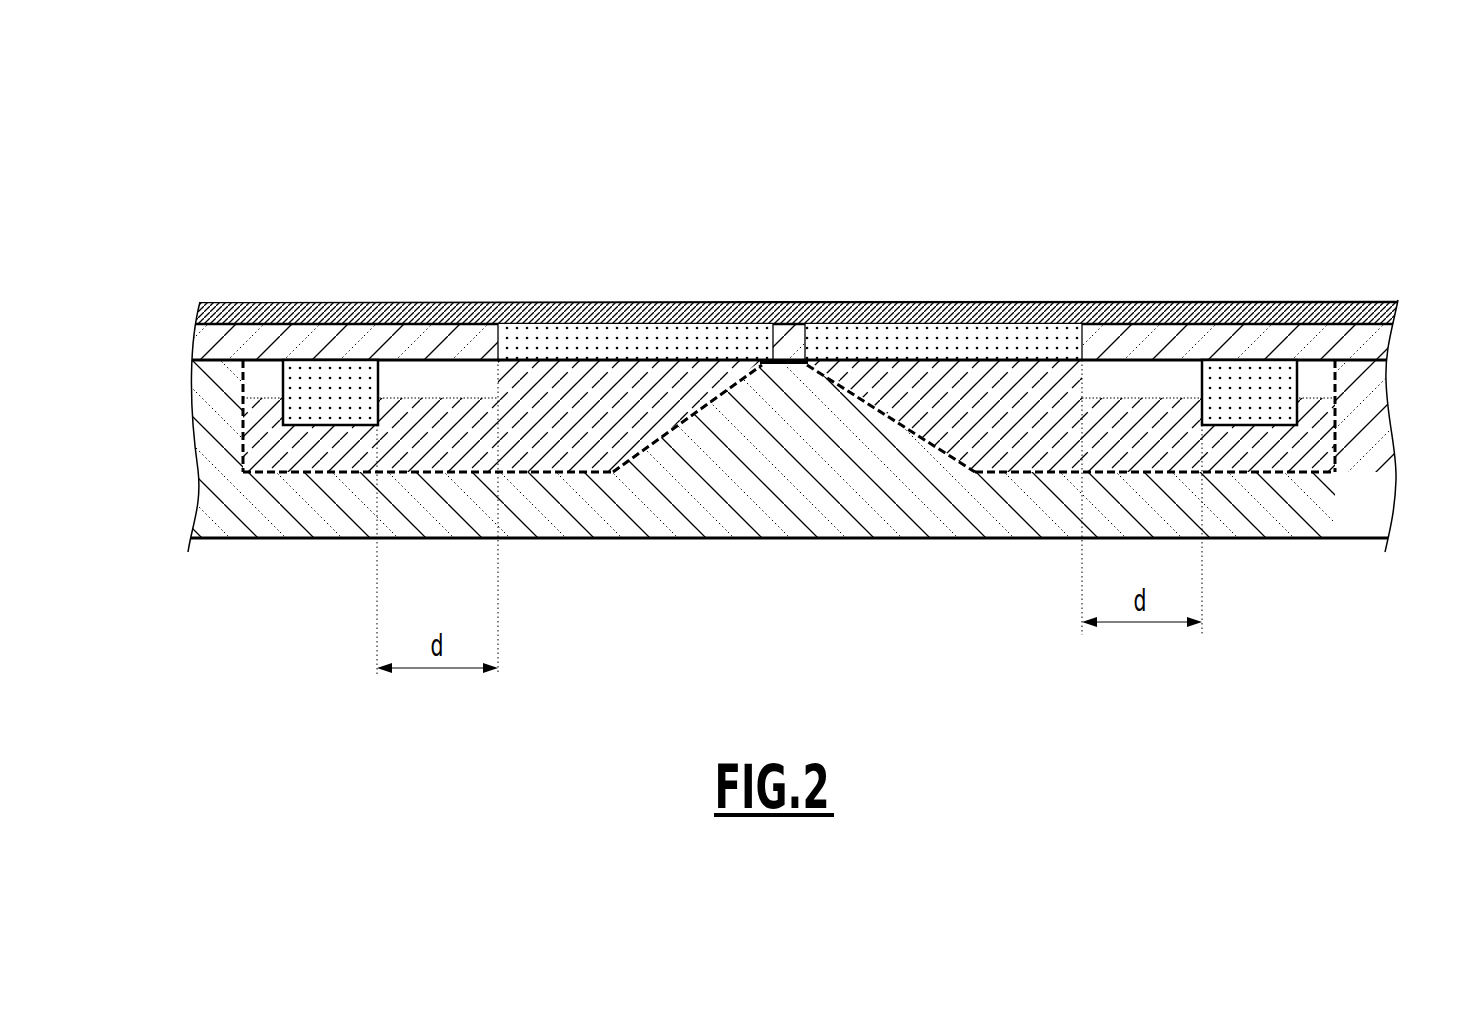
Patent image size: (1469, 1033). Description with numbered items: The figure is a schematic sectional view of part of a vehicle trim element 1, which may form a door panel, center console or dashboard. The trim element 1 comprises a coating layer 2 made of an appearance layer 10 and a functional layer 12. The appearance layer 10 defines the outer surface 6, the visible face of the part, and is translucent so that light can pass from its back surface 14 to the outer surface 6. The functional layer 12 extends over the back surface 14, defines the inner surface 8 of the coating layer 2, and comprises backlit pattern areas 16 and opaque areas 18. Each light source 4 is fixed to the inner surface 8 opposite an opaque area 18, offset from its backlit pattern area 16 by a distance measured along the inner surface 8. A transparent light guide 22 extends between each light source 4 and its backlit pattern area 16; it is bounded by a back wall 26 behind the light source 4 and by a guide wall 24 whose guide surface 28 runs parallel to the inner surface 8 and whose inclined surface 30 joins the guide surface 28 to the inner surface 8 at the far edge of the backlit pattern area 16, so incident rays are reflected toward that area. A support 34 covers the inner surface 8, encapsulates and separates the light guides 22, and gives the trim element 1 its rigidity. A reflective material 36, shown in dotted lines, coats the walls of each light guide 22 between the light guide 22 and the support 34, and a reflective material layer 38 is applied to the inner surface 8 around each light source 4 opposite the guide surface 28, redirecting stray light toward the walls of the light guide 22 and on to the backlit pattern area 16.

The vehicle trim element 1 is at (452, 240).
The coating layer 2 is at (225, 338).
The light source 4 is at (310, 412).
The outer surface 6 is at (705, 303).
The inner surface 8 is at (757, 370).
The appearance layer 10 is at (1055, 317).
The functional layer 12 is at (1360, 338).
The back surface 14 is at (988, 400).
The backlit pattern area 16 is at (618, 340).
The opaque area 18 is at (288, 333).
The light guide 22 is at (643, 385).
The guide wall 24 is at (565, 474).
The back wall 26 is at (243, 428).
The guide surface 28 is at (330, 470).
The inclined surface 30 is at (723, 405).
The support 34 is at (870, 492).
The reflective material 36 is at (448, 474).
The reflective material layer 38 is at (435, 380).